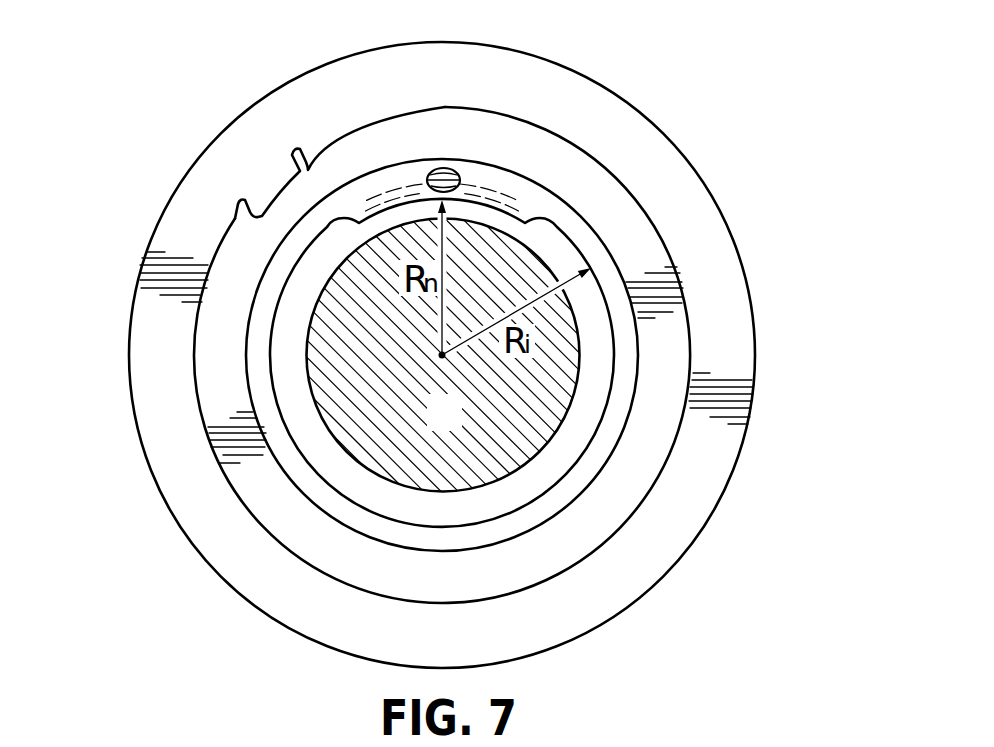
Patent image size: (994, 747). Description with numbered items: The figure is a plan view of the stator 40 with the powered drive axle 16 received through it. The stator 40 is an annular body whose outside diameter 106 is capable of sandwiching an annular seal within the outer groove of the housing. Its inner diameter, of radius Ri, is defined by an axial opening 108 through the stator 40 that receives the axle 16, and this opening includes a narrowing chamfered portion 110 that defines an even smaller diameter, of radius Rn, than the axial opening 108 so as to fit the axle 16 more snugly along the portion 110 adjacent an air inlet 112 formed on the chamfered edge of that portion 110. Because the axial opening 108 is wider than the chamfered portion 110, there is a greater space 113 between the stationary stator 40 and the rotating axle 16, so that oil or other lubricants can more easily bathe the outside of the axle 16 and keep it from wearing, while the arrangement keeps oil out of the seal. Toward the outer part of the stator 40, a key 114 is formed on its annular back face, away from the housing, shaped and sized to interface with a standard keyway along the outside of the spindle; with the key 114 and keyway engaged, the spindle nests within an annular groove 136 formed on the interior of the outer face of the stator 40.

The stator 40 is at (606, 77).
The outside diameter 106 is at (128, 357).
The key 114 is at (309, 169).
The annular groove 136 is at (538, 555).
The narrowing chamfered portion 110 is at (510, 200).
The axial opening 108 is at (395, 516).
The space 113 is at (335, 466).
The air inlet 112 is at (445, 178).
The drive axle 16 is at (458, 427).